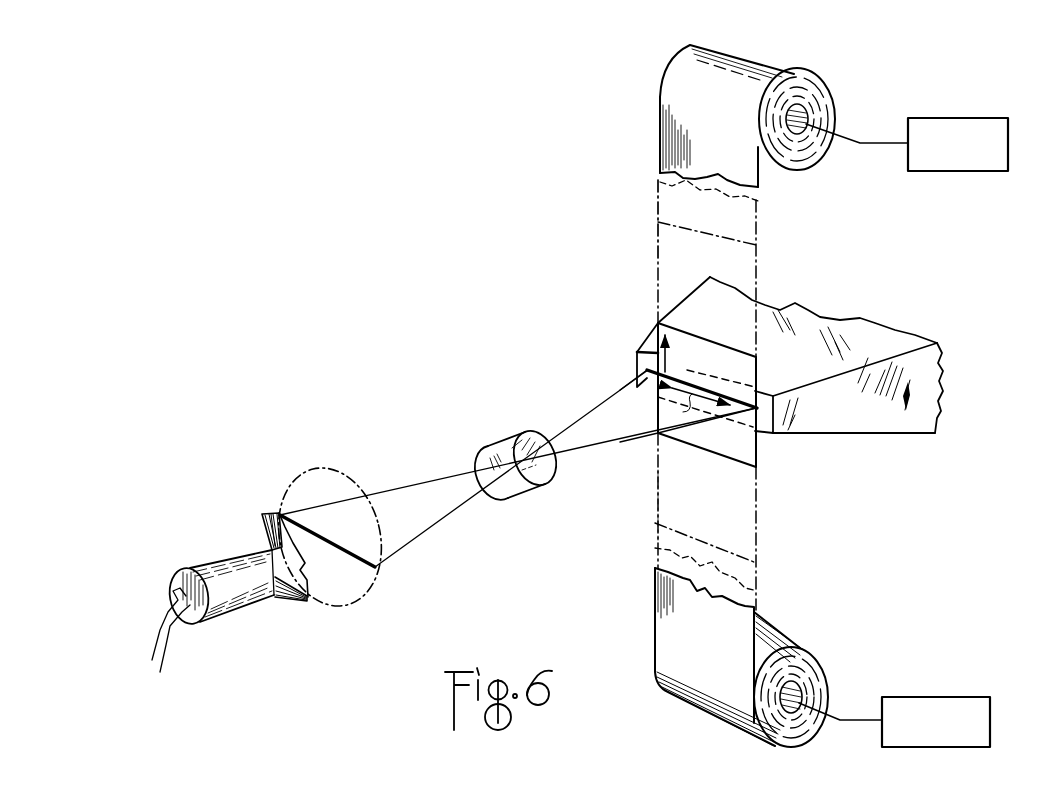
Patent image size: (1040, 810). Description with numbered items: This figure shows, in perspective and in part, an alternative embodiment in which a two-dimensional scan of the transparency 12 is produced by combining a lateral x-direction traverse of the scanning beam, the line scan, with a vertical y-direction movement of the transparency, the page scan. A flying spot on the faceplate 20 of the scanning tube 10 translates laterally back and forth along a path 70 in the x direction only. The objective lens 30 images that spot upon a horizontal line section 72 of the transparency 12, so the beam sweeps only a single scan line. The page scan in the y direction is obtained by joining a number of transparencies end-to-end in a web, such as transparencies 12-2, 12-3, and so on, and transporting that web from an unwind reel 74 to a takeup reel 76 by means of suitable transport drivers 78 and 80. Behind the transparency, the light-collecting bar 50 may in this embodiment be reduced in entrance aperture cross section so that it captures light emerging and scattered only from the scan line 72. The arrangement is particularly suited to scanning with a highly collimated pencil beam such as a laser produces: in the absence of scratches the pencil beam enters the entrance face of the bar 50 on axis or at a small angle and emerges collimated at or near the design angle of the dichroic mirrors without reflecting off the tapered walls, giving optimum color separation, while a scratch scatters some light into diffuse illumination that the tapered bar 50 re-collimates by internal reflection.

The scanning tube 10 is at (245, 595).
The faceplate 20 is at (300, 470).
The path 70 is at (347, 545).
The objective lens 30 is at (512, 445).
The transparency 12 is at (693, 337).
The transparency 12-2 is at (657, 258).
The transparency 12-3 is at (655, 478).
The horizontal line section 72 is at (714, 383).
The light-collecting bar 50 is at (877, 427).
The takeup reel 76 is at (812, 84).
The unwind reel 74 is at (828, 668).
The transport driver 80 is at (958, 118).
The transport driver 78 is at (927, 697).